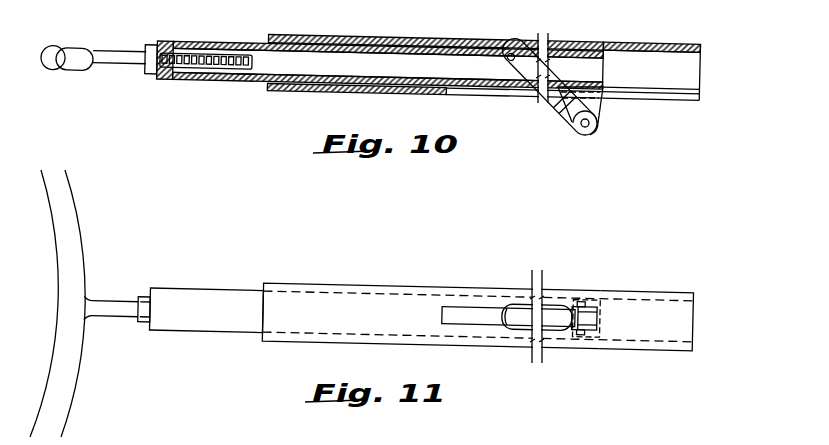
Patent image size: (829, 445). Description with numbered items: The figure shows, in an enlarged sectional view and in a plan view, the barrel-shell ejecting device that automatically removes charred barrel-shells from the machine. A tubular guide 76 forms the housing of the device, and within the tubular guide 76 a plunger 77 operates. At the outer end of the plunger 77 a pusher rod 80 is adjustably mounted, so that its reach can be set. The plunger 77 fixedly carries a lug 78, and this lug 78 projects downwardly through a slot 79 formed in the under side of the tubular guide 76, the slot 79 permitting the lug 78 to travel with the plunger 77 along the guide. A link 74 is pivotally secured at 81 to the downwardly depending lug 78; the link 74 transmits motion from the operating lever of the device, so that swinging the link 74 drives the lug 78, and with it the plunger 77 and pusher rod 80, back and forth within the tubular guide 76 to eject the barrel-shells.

In FIG. 10, the link 74 is at (533, 167).
In FIG. 11, the link 74 is at (520, 308).
In FIG. 10, the tubular guide 76 is at (507, 35).
In FIG. 11, the tubular guide 76 is at (457, 347).
In FIG. 10, the plunger 77 is at (233, 40).
In FIG. 11, the plunger 77 is at (182, 295).
In FIG. 10, the lug 78 is at (595, 105).
In FIG. 10, the slot 79 is at (643, 97).
In FIG. 11, the slot 79 is at (620, 317).
In FIG. 10, the pusher rod 80 is at (80, 46).
In FIG. 11, the pusher rod 80 is at (86, 289).
In FIG. 10, the pivot 81 is at (581, 123).
In FIG. 11, the pivot 81 is at (582, 303).